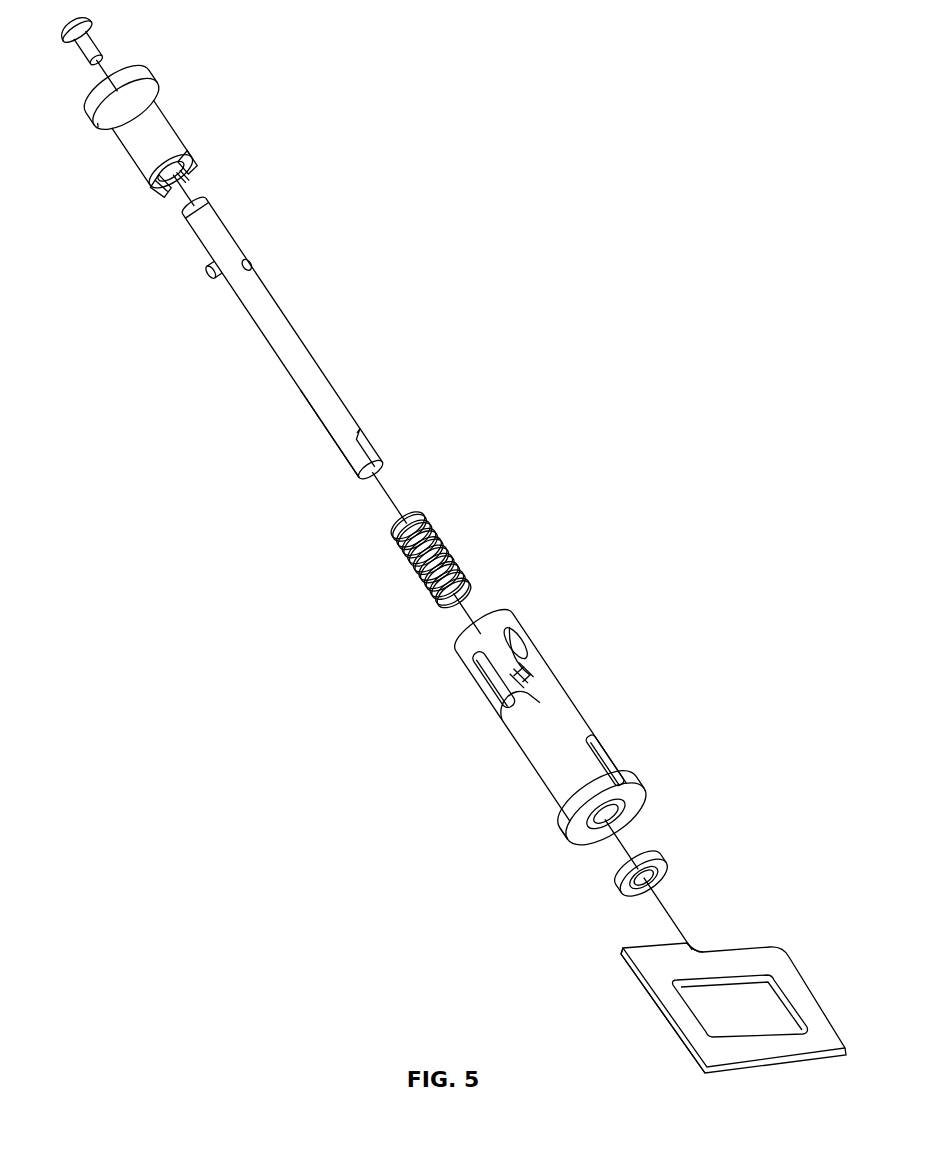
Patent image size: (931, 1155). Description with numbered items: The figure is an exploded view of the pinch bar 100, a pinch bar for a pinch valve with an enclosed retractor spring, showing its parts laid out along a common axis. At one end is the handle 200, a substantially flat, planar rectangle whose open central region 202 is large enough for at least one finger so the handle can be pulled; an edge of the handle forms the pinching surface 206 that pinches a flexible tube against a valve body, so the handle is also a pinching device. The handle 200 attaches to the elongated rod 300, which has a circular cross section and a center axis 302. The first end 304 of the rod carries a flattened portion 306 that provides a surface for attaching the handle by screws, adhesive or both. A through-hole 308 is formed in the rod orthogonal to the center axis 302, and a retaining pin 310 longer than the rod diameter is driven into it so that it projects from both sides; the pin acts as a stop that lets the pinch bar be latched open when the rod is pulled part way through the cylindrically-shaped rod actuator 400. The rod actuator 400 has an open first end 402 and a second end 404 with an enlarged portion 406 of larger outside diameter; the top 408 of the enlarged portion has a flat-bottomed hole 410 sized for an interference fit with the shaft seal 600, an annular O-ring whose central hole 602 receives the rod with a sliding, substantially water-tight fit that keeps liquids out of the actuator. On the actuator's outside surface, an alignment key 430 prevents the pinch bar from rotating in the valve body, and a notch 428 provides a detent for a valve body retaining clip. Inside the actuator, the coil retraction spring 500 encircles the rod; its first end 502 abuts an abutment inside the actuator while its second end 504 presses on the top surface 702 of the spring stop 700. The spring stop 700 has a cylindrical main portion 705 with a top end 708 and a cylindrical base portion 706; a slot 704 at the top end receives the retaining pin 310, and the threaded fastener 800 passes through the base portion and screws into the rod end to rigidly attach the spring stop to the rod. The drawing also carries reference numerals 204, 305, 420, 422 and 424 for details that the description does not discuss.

The pinch bar 100 is at (687, 403).
The handle 200 is at (787, 962).
The central region 202 is at (729, 1021).
The plate notch 204 is at (743, 957).
The pinching surface 206 is at (640, 957).
The elongated rod 300 is at (325, 380).
The center axis 302 is at (385, 498).
The first end 304 is at (327, 433).
The shaft proximal end 305 is at (202, 197).
The flattened portion 306 is at (365, 457).
The through-hole 308 is at (248, 252).
The retaining pin 310 is at (215, 277).
The rod actuator 400 is at (563, 690).
The open first end 402 is at (510, 623).
The second end 404 is at (633, 790).
The enlarged portion 406 is at (573, 823).
The top 408 is at (640, 817).
The flat-bottomed hole 410 is at (597, 837).
The detent surface 420 is at (543, 677).
The side slot 422 is at (472, 677).
The window edge 424 is at (510, 715).
The notch 428 is at (528, 652).
The alignment key 430 is at (595, 732).
The coil retraction spring 500 is at (447, 547).
The first end of spring 502 is at (472, 588).
The second end of spring 504 is at (423, 517).
The shaft seal 600 is at (663, 862).
The hole 602 is at (655, 892).
The spring stop 700 is at (153, 115).
The top surface 702 is at (172, 172).
The slot 704 is at (148, 180).
The main portion 705 is at (113, 137).
The base portion 706 is at (150, 77).
The top end 708 is at (170, 163).
The threaded fastener 800 is at (90, 30).